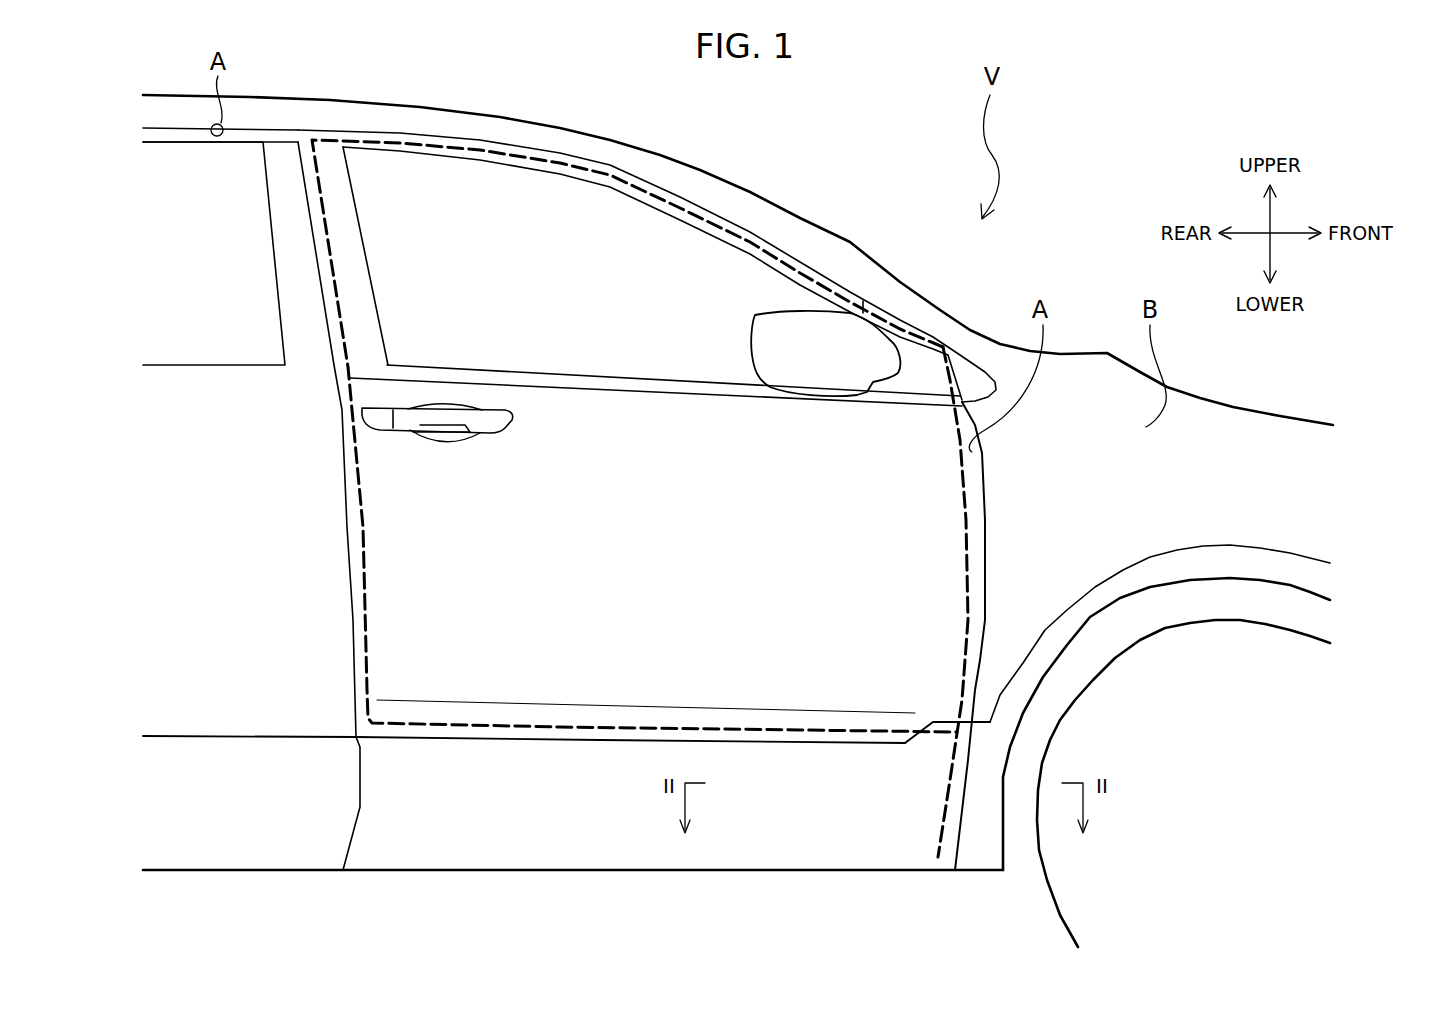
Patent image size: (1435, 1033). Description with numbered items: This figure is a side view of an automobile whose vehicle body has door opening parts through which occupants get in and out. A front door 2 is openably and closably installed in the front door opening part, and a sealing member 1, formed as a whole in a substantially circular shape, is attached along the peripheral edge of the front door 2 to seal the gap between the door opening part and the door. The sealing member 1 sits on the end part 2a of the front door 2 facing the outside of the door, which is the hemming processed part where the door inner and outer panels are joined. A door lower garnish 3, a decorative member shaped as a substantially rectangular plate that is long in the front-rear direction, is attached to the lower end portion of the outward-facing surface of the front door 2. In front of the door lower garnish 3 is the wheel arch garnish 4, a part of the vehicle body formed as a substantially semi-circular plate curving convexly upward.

The sealing member 1 is at (943, 787).
The front door 2 is at (800, 658).
The end part facing the outside of the door 2a is at (755, 690).
The door lower garnish 3 is at (605, 832).
The wheel arch garnish 4 is at (1048, 645).